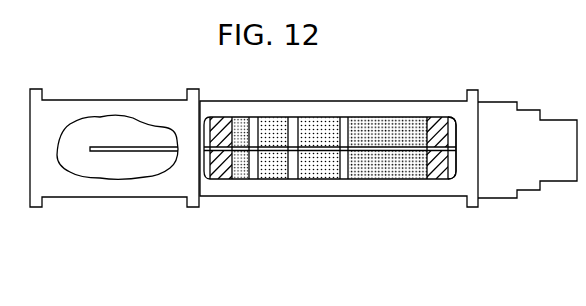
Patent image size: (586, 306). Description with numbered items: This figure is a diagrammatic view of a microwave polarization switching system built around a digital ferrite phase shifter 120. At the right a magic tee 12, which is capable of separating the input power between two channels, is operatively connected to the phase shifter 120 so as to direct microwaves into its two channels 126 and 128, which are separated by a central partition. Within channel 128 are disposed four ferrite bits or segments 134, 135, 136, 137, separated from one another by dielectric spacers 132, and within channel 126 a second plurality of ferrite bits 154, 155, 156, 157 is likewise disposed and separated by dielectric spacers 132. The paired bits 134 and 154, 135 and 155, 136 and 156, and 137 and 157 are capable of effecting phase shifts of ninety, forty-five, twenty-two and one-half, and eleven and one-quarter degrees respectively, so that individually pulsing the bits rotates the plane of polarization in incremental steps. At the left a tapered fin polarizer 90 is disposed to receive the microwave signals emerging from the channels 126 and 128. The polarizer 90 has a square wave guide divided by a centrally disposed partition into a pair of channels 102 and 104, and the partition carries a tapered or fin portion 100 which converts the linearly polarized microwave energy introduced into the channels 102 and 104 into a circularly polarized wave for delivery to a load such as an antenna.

The magic tee 12 is at (526, 76).
The tapered fin polarizer 90 is at (123, 76).
The tapered or fin portion 100 is at (128, 147).
The channel 102 is at (143, 130).
The channel 104 is at (130, 165).
The phase shifter 120 is at (333, 74).
The channel 126 is at (455, 127).
The channel 128 is at (453, 183).
The dielectric spacers 132 is at (252, 172).
The ferrite bit 134 is at (393, 175).
The ferrite bit 135 is at (317, 163).
The ferrite bit 136 is at (277, 167).
The ferrite bit 137 is at (238, 175).
The ferrite bit 154 is at (377, 127).
The ferrite bit 155 is at (318, 120).
The ferrite bit 156 is at (272, 132).
The ferrite bit 157 is at (245, 122).